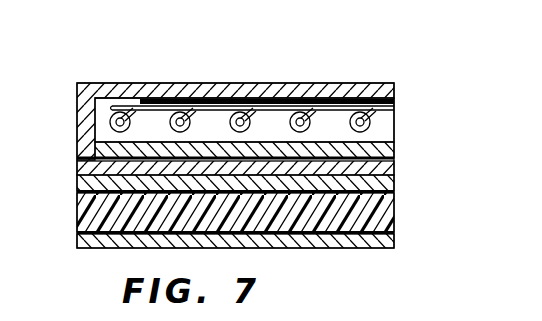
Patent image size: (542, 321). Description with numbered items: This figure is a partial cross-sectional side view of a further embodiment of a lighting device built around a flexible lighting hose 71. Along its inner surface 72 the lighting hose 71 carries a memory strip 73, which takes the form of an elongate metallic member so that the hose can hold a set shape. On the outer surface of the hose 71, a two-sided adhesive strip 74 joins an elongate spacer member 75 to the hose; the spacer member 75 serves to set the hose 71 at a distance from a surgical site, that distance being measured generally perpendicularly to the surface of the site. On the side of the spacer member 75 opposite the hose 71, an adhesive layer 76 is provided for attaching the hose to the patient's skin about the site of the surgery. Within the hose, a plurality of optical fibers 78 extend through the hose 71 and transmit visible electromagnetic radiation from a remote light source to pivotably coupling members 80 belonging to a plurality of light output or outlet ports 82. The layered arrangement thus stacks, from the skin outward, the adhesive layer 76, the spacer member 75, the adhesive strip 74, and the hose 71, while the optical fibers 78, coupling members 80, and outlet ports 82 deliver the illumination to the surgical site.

The lighting hose 71 is at (215, 86).
The inner surface 72 is at (266, 99).
The memory strip 73 is at (110, 152).
The two-sided adhesive strip 74 is at (378, 186).
The elongate spacer member 75 is at (103, 210).
The adhesive layer 76 is at (378, 245).
The optical fibers 78 is at (333, 106).
The pivotably coupling members 80 is at (172, 112).
The light output or outlet ports 82 is at (373, 122).